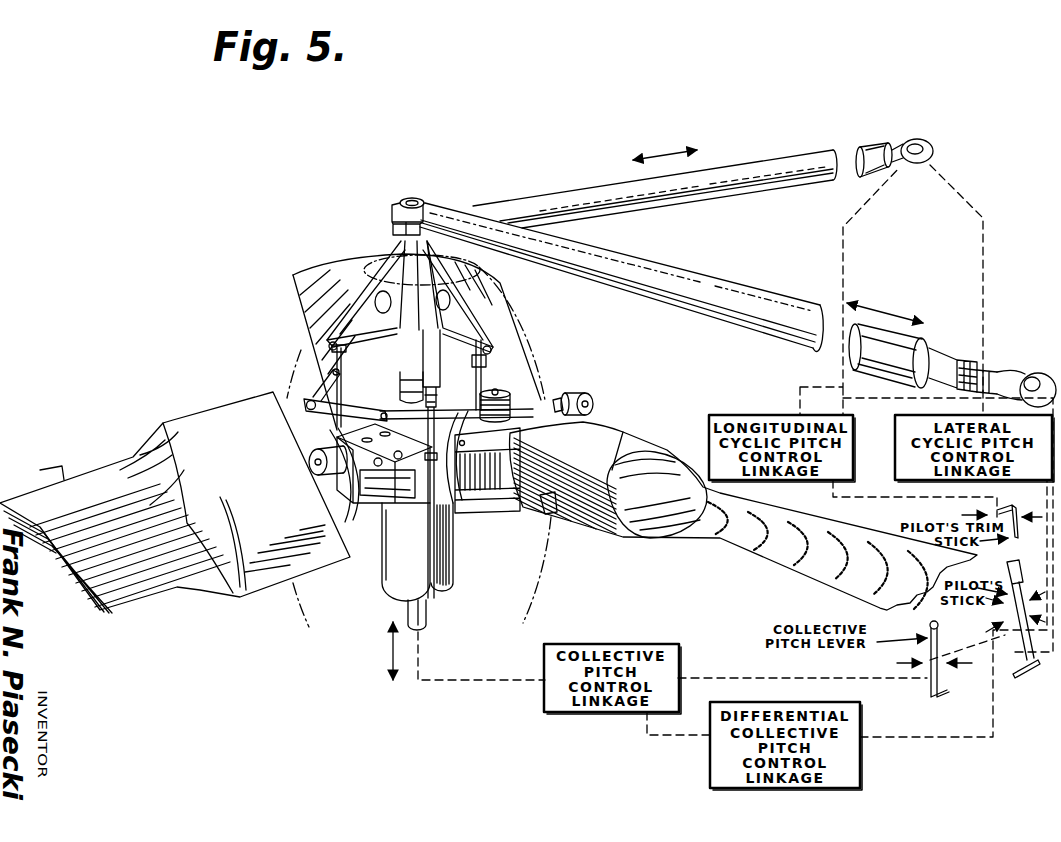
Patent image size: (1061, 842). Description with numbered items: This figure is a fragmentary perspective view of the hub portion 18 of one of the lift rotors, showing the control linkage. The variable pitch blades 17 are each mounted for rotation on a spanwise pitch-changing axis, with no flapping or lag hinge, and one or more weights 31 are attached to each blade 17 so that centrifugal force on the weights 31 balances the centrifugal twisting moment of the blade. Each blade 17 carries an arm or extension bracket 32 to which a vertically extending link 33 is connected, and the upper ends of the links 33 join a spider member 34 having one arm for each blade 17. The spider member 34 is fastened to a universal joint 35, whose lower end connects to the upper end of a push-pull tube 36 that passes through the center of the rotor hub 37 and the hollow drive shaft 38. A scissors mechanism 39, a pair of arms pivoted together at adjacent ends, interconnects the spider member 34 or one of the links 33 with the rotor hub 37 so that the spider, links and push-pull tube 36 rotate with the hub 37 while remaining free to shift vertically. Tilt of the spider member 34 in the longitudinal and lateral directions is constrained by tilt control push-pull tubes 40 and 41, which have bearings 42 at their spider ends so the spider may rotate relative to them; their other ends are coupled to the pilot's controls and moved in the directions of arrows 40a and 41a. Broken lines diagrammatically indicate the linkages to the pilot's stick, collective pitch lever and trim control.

The variable pitch blade 17 is at (300, 286).
The hub portion 18 is at (533, 357).
The weight 31 is at (583, 393).
The arm or extension bracket 32 is at (392, 497).
The vertically extending link 33 is at (440, 395).
The spider member 34 is at (483, 316).
The universal joint 35 is at (407, 380).
The push-pull tube 36 is at (427, 619).
The rotor hub 37 is at (460, 394).
The hollow drive shaft 38 is at (381, 582).
The scissors mechanism 39 is at (310, 400).
The tilt control push-pull tube 40 is at (748, 168).
The arrow 40a is at (665, 140).
The tilt control push-pull tube 41 is at (745, 290).
The arrow 41a is at (884, 312).
The bearing 42 is at (392, 228).